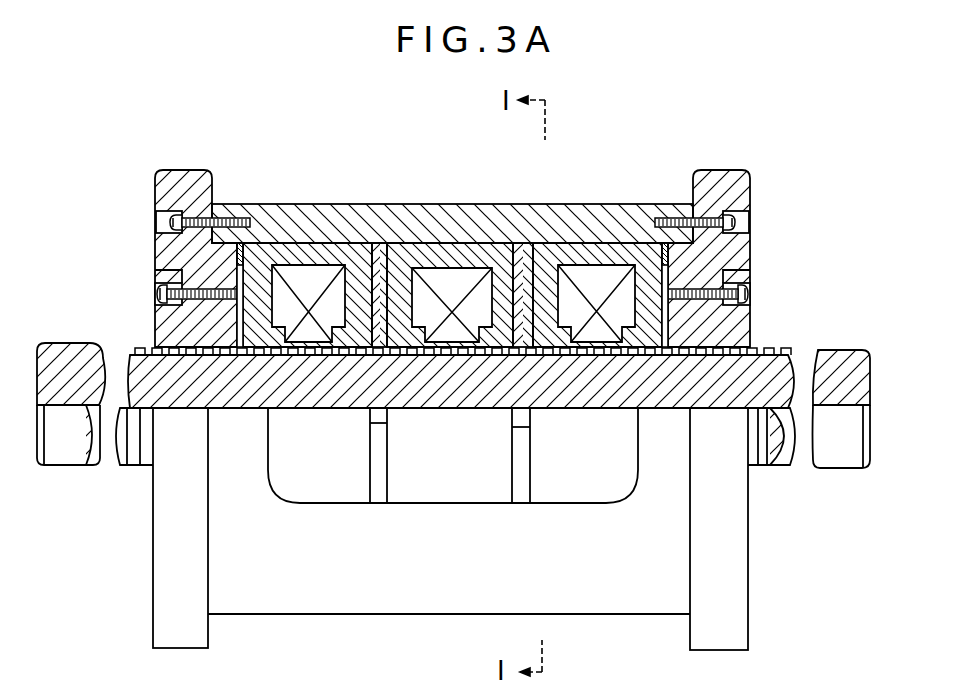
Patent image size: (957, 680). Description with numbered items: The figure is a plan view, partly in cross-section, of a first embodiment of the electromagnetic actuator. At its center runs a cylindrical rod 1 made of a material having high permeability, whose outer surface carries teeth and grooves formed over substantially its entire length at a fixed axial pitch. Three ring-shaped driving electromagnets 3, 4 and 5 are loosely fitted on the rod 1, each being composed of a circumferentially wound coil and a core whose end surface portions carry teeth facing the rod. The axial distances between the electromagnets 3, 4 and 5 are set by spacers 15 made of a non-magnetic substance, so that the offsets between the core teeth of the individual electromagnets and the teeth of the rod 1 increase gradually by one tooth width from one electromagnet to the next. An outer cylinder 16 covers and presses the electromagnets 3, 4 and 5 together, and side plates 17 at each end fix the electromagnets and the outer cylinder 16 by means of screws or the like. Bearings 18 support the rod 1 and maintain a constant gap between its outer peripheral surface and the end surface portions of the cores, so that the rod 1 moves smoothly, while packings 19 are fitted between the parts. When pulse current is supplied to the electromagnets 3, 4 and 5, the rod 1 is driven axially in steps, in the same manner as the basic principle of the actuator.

The cylindrical rod 1 is at (766, 350).
The driving electro-magnet 3 is at (302, 250).
The driving electro-magnet 4 is at (440, 250).
The driving electro-magnet 5 is at (593, 253).
The spacer 15 is at (381, 250).
The outer cylinder 16 is at (558, 212).
The side plate 17 is at (157, 185).
The bearing 18 is at (166, 324).
The packing 19 is at (240, 257).